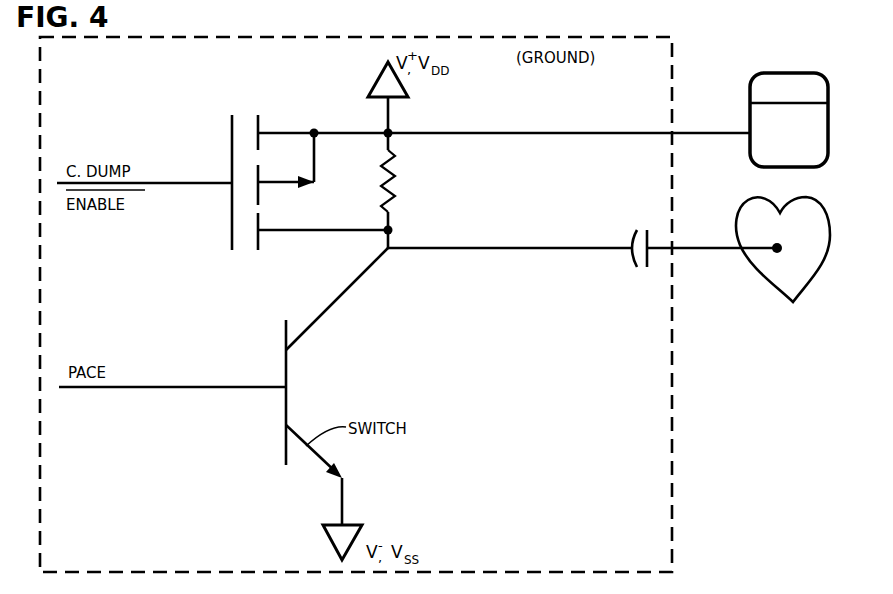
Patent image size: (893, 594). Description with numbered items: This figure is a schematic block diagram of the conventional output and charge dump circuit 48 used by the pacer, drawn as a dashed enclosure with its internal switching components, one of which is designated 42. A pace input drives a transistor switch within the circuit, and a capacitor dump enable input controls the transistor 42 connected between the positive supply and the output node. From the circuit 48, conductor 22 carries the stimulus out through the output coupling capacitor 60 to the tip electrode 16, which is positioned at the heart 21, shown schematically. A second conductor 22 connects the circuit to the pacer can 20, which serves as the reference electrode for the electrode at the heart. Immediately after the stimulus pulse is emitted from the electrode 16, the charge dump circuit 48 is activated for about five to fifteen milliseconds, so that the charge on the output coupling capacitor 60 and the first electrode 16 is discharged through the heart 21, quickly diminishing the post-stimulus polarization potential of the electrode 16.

The tip electrode 16 is at (780, 250).
The pacer can 20 is at (815, 139).
The heart 21 is at (803, 236).
The conductor 22 is at (576, 133).
The capacitor dump transistor 42 is at (373, 90).
The output and charge dump circuit 48 is at (543, 386).
The output coupling capacitor 60 is at (630, 240).